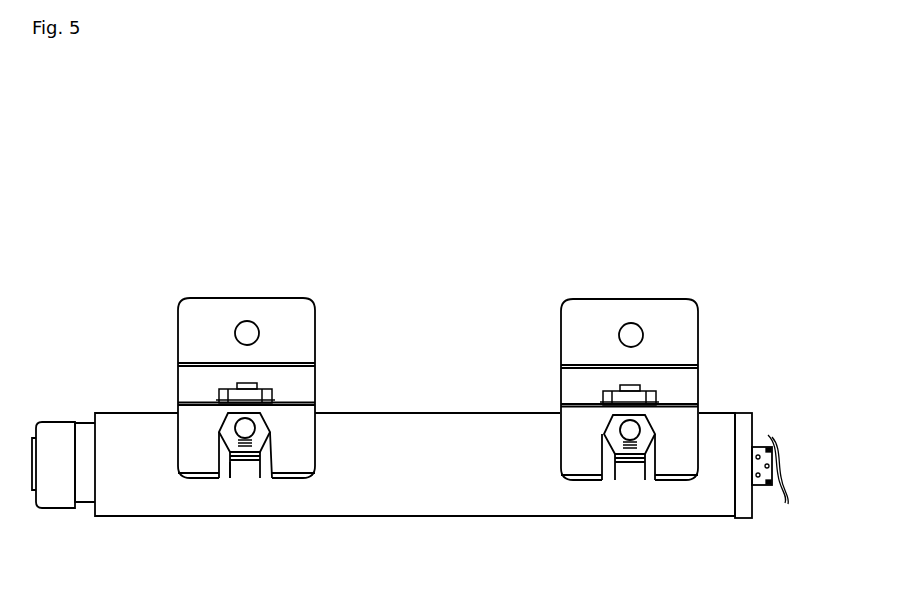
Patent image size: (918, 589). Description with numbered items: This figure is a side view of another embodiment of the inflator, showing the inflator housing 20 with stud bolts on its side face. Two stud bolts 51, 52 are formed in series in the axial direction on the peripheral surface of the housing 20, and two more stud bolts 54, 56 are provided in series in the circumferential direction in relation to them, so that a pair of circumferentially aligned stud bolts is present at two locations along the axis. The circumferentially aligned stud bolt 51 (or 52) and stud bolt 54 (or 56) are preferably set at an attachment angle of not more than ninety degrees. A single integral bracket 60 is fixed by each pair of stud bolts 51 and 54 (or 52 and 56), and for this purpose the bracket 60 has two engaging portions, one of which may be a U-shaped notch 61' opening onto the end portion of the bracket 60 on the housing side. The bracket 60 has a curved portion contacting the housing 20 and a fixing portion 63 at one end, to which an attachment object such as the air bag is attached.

The inflator housing 20 is at (400, 412).
The stud bolt 51 is at (237, 385).
The stud bolt 52 is at (628, 386).
The stud bolt 54 is at (247, 426).
The stud bolt 56 is at (632, 427).
The bracket 60 is at (312, 317).
The U-shaped notch 61' is at (223, 514).
The fixing portion 63 is at (247, 330).